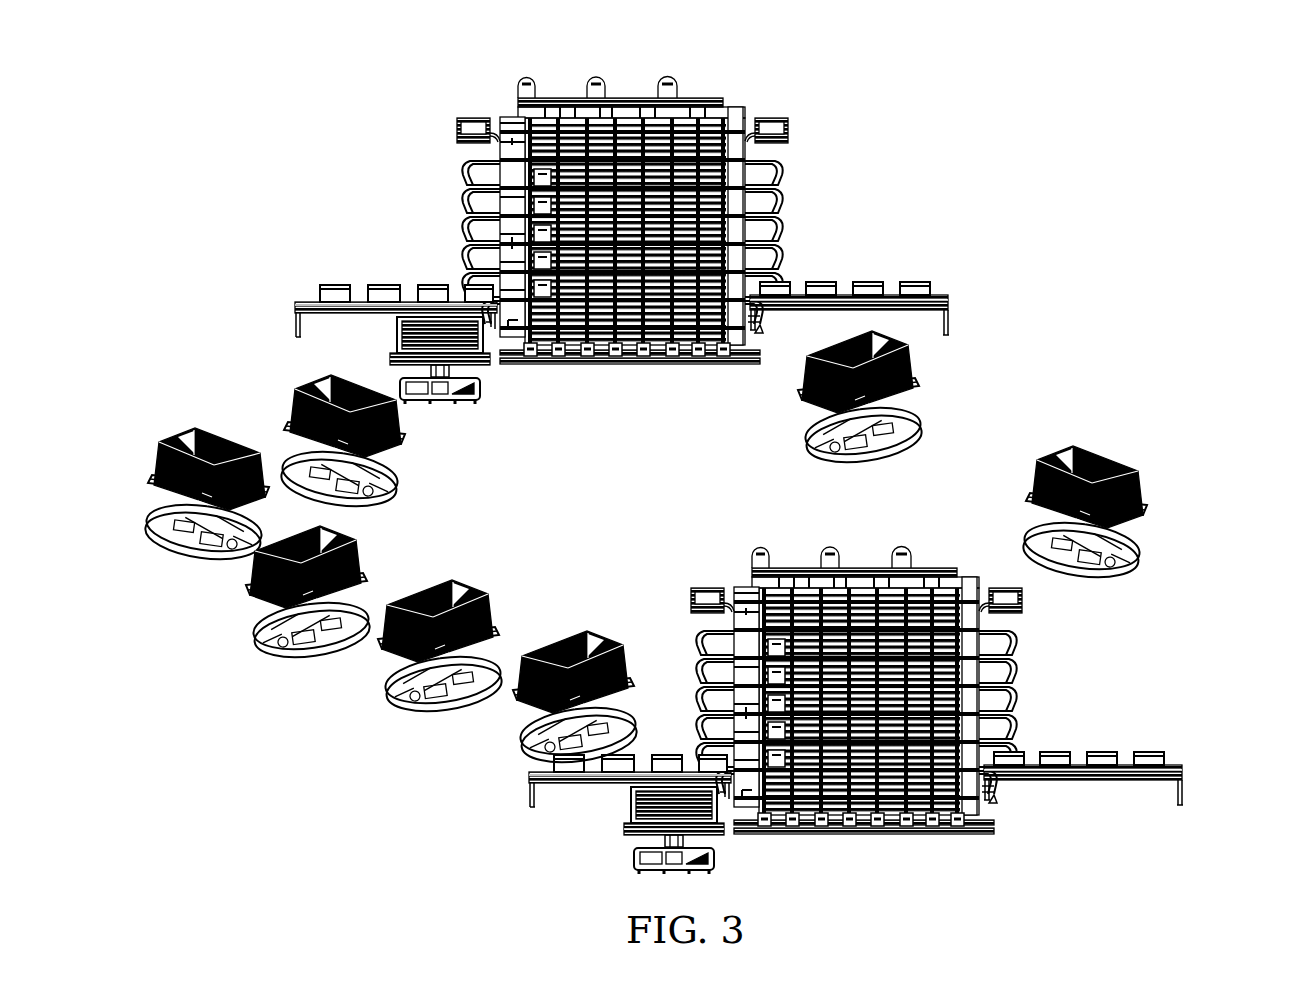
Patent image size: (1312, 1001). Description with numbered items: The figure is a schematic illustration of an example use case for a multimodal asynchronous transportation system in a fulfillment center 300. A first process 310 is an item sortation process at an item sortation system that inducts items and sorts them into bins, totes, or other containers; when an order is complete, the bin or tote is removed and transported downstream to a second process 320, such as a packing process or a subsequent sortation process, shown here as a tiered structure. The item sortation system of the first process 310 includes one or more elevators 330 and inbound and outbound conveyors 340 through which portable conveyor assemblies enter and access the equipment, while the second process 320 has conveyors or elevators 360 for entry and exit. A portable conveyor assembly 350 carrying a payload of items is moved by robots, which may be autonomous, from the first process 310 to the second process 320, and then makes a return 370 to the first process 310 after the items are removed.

The fulfillment center 300 is at (1187, 68).
The first process 310 is at (871, 107).
The second process 320 is at (688, 565).
The elevators 330 is at (796, 193).
The inbound and outbound conveyors 340 is at (881, 259).
The portable conveyor assembly 350 is at (282, 375).
The conveyors or elevators 360 is at (638, 626).
The return 370 is at (1101, 430).